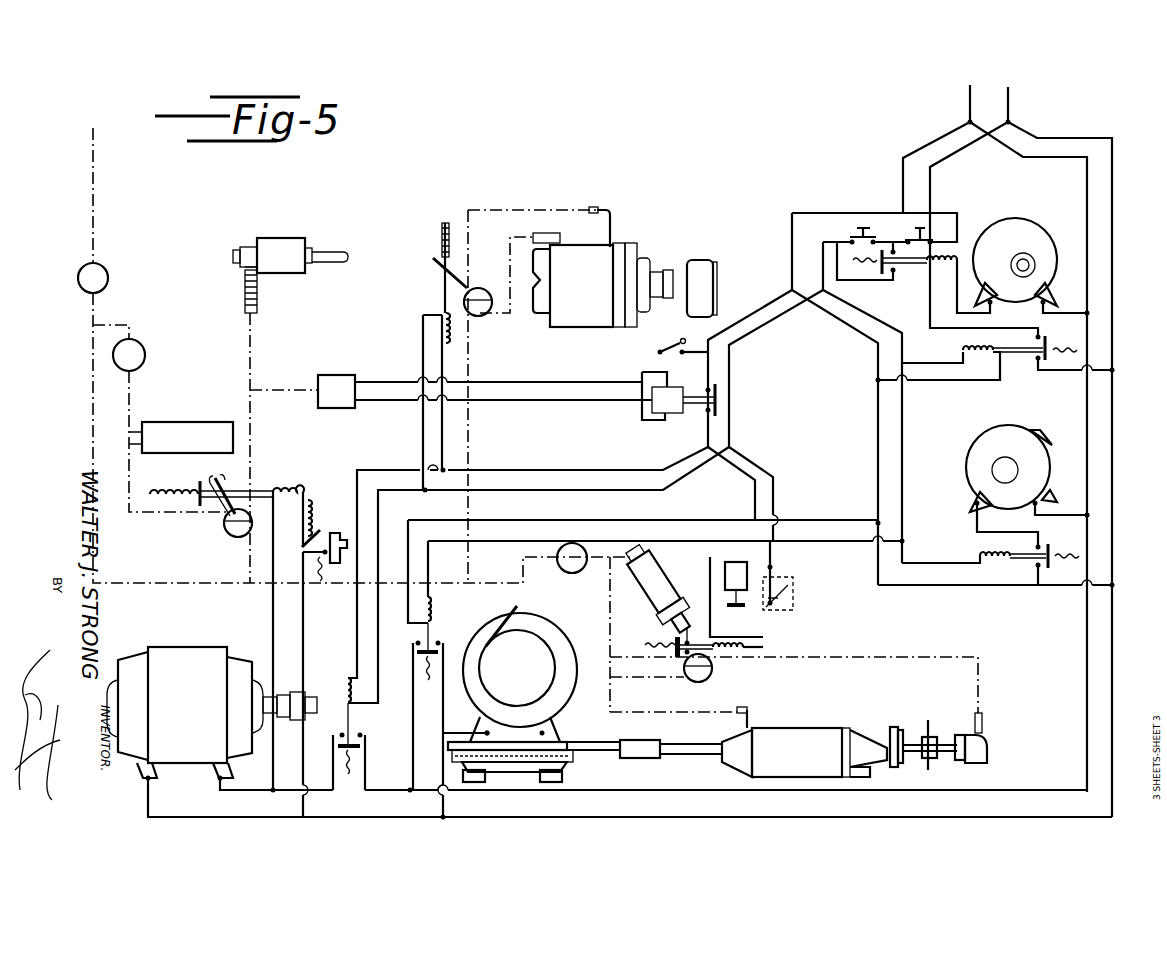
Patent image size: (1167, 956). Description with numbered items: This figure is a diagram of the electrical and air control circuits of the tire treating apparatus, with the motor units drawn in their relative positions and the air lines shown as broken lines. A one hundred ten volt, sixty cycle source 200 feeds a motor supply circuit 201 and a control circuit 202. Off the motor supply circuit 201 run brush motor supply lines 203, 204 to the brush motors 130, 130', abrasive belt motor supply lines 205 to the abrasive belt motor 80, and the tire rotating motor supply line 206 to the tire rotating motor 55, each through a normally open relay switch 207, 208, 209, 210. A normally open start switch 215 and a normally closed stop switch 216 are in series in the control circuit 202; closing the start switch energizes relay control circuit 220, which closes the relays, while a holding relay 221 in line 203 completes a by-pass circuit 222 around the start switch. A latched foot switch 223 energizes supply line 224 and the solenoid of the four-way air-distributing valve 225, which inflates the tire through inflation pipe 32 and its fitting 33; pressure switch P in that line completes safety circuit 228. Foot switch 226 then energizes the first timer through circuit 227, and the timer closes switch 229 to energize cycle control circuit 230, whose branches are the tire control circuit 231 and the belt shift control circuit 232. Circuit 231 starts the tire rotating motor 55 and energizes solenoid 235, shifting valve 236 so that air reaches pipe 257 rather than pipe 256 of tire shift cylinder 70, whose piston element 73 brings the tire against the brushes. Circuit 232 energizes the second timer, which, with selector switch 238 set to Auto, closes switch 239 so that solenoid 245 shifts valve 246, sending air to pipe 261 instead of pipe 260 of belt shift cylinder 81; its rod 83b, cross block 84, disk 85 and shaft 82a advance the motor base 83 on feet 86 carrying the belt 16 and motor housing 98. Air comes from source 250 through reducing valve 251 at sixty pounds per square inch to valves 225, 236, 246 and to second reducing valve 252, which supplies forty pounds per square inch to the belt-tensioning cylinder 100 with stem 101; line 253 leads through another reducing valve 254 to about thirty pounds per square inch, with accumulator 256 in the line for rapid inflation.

The source 200 is at (1012, 75).
The motor supply circuit 201 is at (1045, 145).
The control circuit 202 is at (955, 140).
The brush motor supply line 203 is at (1095, 313).
The brush motor supply line 204 is at (1085, 515).
The abrasive belt motor supply lines 205 is at (428, 772).
The tire rotating motor supply line 206 is at (380, 803).
The relay switch 207 is at (1012, 360).
The relay switch 208 is at (1028, 572).
The relay switch 209 is at (433, 630).
The relay switch 210 is at (357, 735).
The start switch 215 is at (872, 222).
The stop switch 216 is at (940, 225).
The relay control circuit 220 is at (862, 325).
The holding relay 221 is at (915, 272).
The circuit 222 is at (820, 245).
The solenoid relay 223 is at (315, 532).
The supply line 224 is at (290, 633).
The air-distributing valve 225 is at (225, 530).
The foot switch 226 is at (656, 350).
The circuit 227 is at (700, 355).
The safety circuit 228 is at (505, 392).
The switch 229 is at (703, 393).
The cycle control circuit 230 is at (725, 427).
The tire rotation and shift control circuit 231 is at (583, 478).
The abrasive belt unit shift control circuit 232 is at (770, 500).
The solenoid 235 is at (452, 337).
The air-distribution valve 236 is at (480, 316).
The selector switch 238 is at (775, 580).
The switch 239 is at (700, 600).
The solenoid 245 is at (768, 658).
The air-distribution valve 246 is at (713, 675).
The air source 250 is at (82, 128).
The reducing valve 251 is at (82, 263).
The second reducing valve 252 is at (572, 570).
The line 253 is at (132, 328).
The pressure regulator 254 is at (147, 350).
The accumulator 256 is at (545, 236).
The pipe 257 is at (605, 212).
The cylinder pipe 260 is at (750, 712).
The cylinder pipe 261 is at (345, 568).
The brush lever 16 is at (513, 607).
The inflation pipe 32 is at (245, 298).
The valve 33 is at (285, 240).
The tire rotating motor 55 is at (170, 650).
The tire shift cylinder 70 is at (565, 262).
The piston disk 73 is at (700, 262).
The abrasive belt motor 80 is at (540, 622).
The belt shift cylinder 81 is at (825, 740).
The shaft 82a is at (700, 748).
The motor base 83 is at (512, 770).
The piston rod 83b is at (915, 752).
The cross block 84 is at (930, 725).
The piston disk 85 is at (892, 730).
The base feet 86 is at (472, 782).
The motor housing 98 is at (550, 660).
The belt-tensioning cylinder 100 is at (663, 565).
The valve stem 101 is at (672, 618).
The brush motor 130 is at (1031, 257).
The brush motor 130' is at (1014, 475).